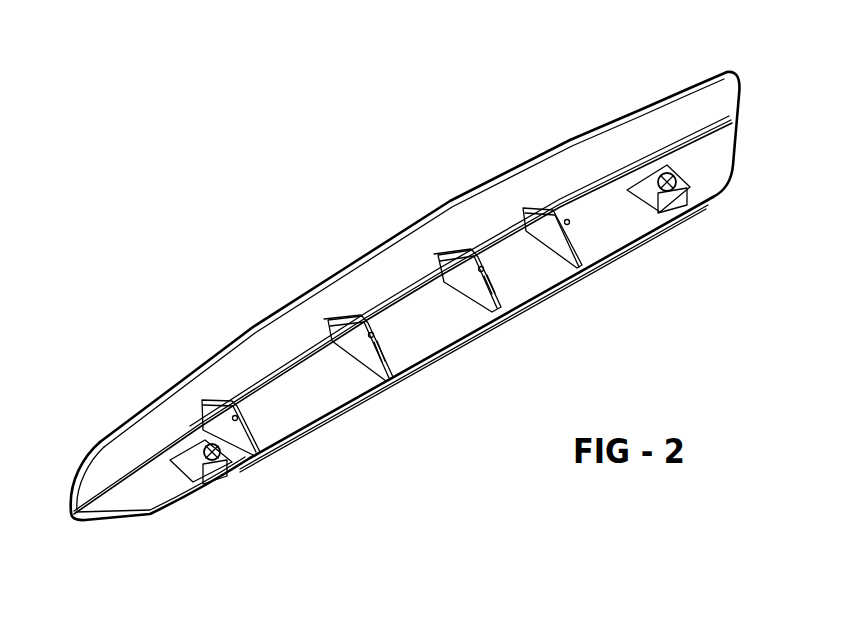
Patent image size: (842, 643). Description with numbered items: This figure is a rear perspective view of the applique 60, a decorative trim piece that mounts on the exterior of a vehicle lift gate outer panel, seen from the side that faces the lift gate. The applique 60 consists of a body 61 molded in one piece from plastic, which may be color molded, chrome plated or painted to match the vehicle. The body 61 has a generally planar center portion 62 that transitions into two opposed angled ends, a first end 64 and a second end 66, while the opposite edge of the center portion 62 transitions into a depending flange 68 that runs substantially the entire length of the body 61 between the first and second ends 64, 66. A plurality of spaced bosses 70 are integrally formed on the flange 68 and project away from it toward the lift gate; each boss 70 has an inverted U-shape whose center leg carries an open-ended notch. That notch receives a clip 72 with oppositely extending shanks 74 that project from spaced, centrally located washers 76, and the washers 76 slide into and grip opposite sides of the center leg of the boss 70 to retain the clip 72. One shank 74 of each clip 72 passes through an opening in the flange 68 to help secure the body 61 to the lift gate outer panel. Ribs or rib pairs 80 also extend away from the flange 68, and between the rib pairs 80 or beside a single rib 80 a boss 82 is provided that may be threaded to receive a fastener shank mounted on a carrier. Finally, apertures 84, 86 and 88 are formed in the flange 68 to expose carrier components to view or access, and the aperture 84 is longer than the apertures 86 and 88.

The applique 60 is at (405, 307).
The body 61 is at (132, 437).
The center portion 62 is at (413, 259).
The first end 64 is at (742, 90).
The second end 66 is at (74, 479).
The flange 68 is at (138, 510).
The boss 70 is at (212, 478).
The clip 72 is at (233, 452).
The shank 74 is at (200, 486).
The washer 76 is at (204, 447).
The rib 80 is at (258, 432).
The boss 82 is at (567, 218).
The aperture 84 is at (290, 378).
The aperture 86 is at (400, 313).
The aperture 88 is at (517, 283).